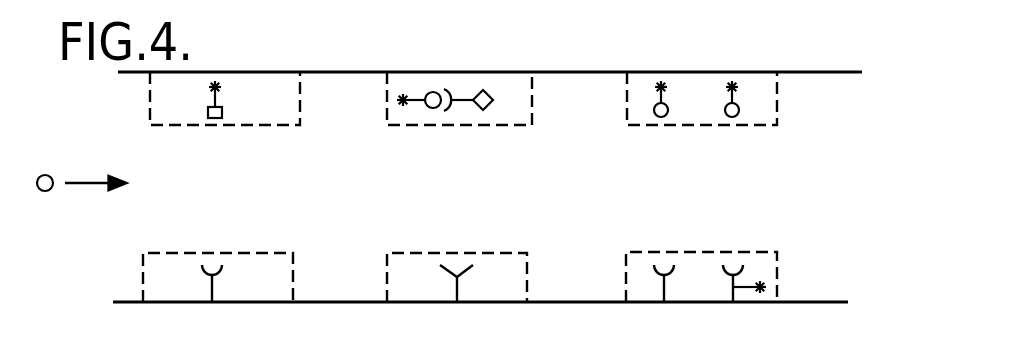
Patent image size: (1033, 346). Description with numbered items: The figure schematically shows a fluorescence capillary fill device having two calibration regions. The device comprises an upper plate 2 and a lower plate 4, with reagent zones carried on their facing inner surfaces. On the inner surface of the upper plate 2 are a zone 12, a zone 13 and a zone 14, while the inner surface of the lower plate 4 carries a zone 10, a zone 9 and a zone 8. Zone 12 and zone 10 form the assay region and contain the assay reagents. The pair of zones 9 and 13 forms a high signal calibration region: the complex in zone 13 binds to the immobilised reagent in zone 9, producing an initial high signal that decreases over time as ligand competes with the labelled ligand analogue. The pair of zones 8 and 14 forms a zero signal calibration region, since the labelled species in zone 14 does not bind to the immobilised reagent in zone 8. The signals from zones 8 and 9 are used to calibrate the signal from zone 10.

The upper plate 2 is at (828, 72).
The lower plate 4 is at (818, 302).
The zone 8 is at (293, 273).
The zone 9 is at (527, 275).
The zone 10 is at (777, 272).
The zone 12 is at (777, 95).
The zone 13 is at (532, 100).
The zone 14 is at (300, 95).